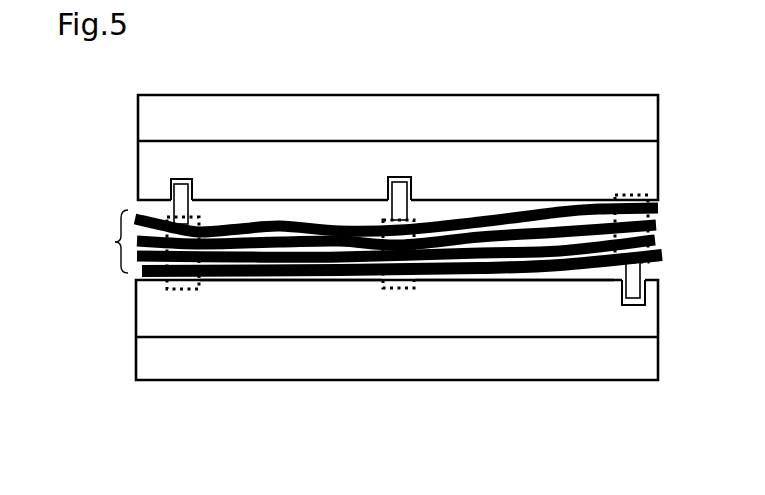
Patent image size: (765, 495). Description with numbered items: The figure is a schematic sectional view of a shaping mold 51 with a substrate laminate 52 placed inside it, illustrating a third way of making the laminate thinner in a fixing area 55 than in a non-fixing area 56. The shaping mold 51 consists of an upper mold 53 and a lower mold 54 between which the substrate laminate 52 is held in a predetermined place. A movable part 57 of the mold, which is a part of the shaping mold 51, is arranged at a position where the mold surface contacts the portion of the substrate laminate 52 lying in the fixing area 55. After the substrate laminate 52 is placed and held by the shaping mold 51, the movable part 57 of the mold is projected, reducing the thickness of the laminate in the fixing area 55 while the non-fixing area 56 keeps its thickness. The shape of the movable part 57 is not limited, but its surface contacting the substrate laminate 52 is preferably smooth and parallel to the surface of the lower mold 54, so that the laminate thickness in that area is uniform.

The shaping mold 51 is at (78, 357).
The substrate laminate 52 is at (110, 256).
The upper mold 53 is at (157, 179).
The lower mold 54 is at (152, 320).
The fixing area 55 is at (633, 190).
The non-fixing area 56 is at (303, 293).
The movable part of mold 57 is at (185, 172).